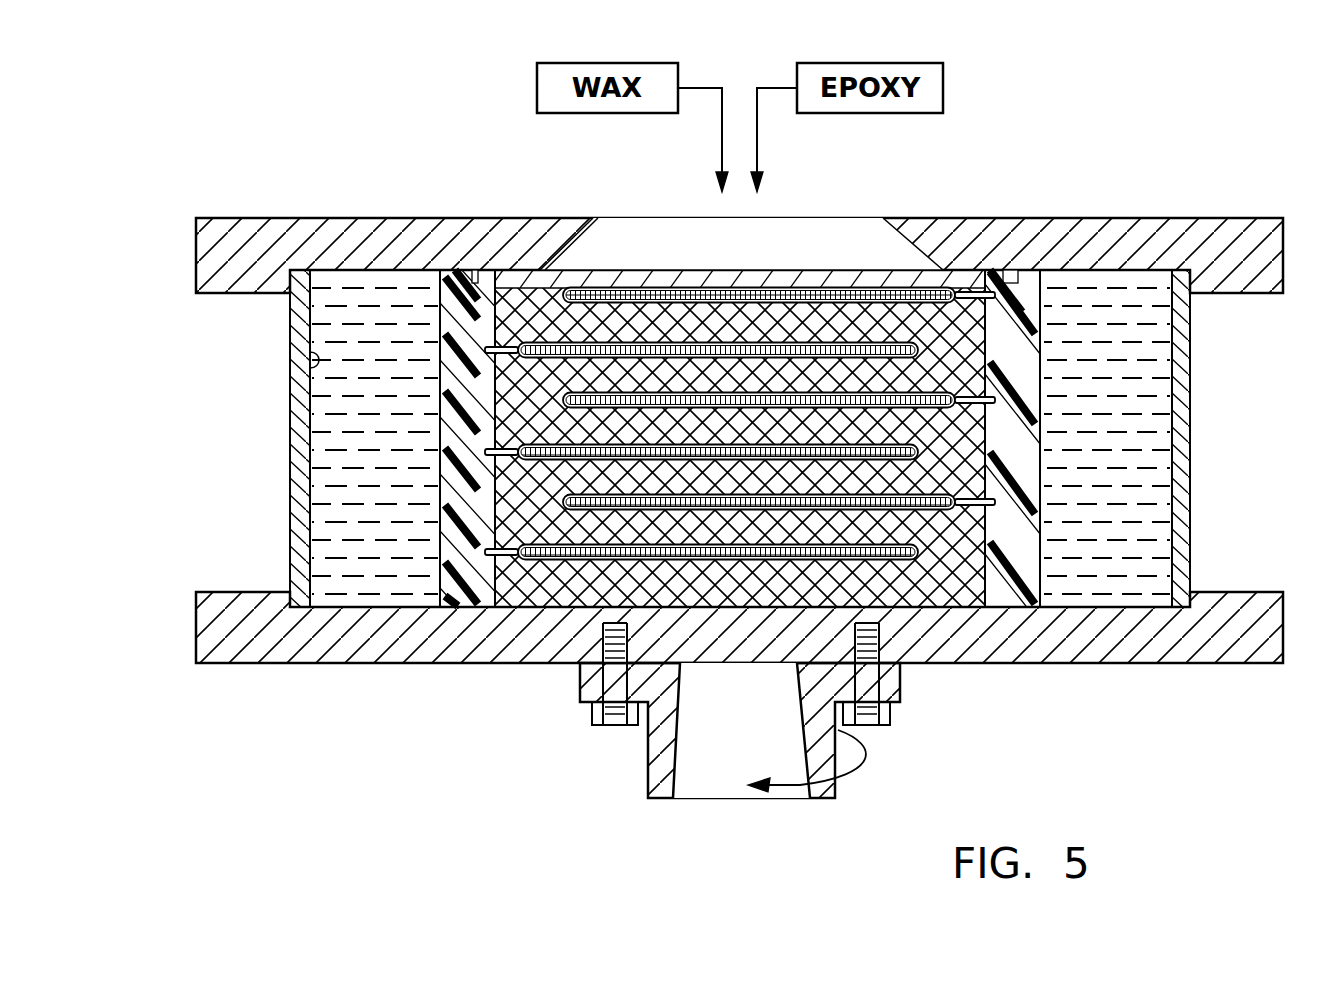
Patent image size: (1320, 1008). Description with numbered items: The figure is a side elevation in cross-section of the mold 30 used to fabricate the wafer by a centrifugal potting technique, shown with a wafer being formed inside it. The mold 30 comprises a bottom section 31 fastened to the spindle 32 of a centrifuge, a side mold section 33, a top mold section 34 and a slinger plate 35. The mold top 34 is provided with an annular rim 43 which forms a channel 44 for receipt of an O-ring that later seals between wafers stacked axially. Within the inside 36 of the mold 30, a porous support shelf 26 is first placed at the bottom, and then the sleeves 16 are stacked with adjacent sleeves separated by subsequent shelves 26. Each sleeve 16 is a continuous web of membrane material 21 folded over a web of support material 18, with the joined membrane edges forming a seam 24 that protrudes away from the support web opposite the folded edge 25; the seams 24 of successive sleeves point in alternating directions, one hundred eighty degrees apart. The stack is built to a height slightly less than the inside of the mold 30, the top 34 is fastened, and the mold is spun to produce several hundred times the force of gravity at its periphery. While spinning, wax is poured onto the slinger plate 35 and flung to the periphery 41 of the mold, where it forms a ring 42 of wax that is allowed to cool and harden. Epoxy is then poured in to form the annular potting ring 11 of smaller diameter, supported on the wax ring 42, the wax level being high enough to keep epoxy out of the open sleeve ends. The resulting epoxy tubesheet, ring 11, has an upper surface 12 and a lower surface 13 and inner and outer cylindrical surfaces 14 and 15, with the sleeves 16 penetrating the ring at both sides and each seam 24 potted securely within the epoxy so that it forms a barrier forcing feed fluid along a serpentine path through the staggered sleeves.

The annular potting ring 11 is at (430, 282).
The upper surface 12 is at (1030, 275).
The lower surface 13 is at (483, 610).
The inner cylindrical surface 14 is at (975, 285).
The outer cylindrical surface 15 is at (1045, 580).
The sleeve 16 is at (848, 280).
The support material 18 is at (618, 292).
The membrane material 21 is at (813, 340).
The seam 24 is at (458, 600).
The folded edge 25 is at (917, 560).
The porous support shelf 26 is at (563, 378).
The mold 30 is at (252, 513).
The bottom section 31 is at (1240, 664).
The spindle 32 is at (655, 752).
The side mold section 33 is at (1185, 510).
The top mold section 34 is at (1200, 262).
The slinger plate 35 is at (668, 272).
The inside 36 is at (310, 358).
The periphery 41 is at (1170, 412).
The ring 42 is at (1162, 458).
The annular rim 43 is at (1010, 272).
The channel 44 is at (463, 285).